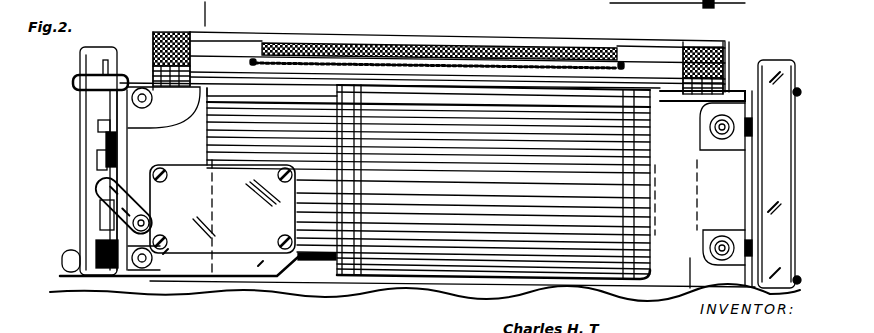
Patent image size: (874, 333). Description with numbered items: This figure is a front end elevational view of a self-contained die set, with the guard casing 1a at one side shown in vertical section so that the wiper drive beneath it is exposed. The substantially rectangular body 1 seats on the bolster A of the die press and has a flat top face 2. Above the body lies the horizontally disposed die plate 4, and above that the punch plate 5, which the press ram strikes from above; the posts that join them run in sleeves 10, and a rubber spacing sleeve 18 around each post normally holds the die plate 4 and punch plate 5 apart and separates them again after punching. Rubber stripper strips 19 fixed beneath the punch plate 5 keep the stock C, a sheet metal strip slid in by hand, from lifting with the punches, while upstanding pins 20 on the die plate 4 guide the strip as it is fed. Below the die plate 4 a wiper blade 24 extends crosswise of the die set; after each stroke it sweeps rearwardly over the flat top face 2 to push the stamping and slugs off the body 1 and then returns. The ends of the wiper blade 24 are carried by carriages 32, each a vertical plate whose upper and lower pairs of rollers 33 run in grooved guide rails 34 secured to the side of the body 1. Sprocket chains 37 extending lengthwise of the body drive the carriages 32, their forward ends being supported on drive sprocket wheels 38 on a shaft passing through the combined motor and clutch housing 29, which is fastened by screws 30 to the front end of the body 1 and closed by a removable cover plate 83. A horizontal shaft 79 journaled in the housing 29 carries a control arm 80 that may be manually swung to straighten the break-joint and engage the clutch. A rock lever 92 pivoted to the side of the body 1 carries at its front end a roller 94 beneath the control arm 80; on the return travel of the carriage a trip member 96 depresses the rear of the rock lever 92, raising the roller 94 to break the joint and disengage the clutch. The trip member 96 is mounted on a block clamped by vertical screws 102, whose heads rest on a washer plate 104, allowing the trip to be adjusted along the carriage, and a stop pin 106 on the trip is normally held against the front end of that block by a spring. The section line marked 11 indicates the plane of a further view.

The body 1 is at (226, 85).
The guard casing 1a is at (80, 117).
The flat top face 2 is at (640, 82).
The die plate 4 is at (441, 69).
The punch plate 5 is at (508, 42).
The sleeve 10 is at (153, 52).
The section line 11 is at (192, 13).
The rubber spacing sleeve 18 is at (170, 42).
The rubber stripper strip 19 is at (415, 44).
The upstanding pin 20 is at (254, 58).
The wiper blade 24 is at (296, 73).
The combined motor and clutch housing 29 is at (322, 265).
The screw 30 is at (155, 262).
The carriage member 32 is at (84, 100).
The roller 33 is at (155, 98).
The guide rail 34 is at (123, 80).
The sprocket chain 37 is at (106, 160).
The drive sprocket wheel 38 is at (132, 172).
The horizontal shaft 79 is at (150, 224).
The control arm 80 is at (102, 190).
The cover plate 83 is at (246, 240).
The rock lever 92 is at (86, 278).
The roller 94 is at (80, 242).
The trip member 96 is at (96, 211).
The vertical screw 102 is at (98, 127).
The washer plate 104 is at (106, 142).
The stop pin 106 is at (90, 221).
The bolster A is at (320, 290).
The stock C is at (438, 63).